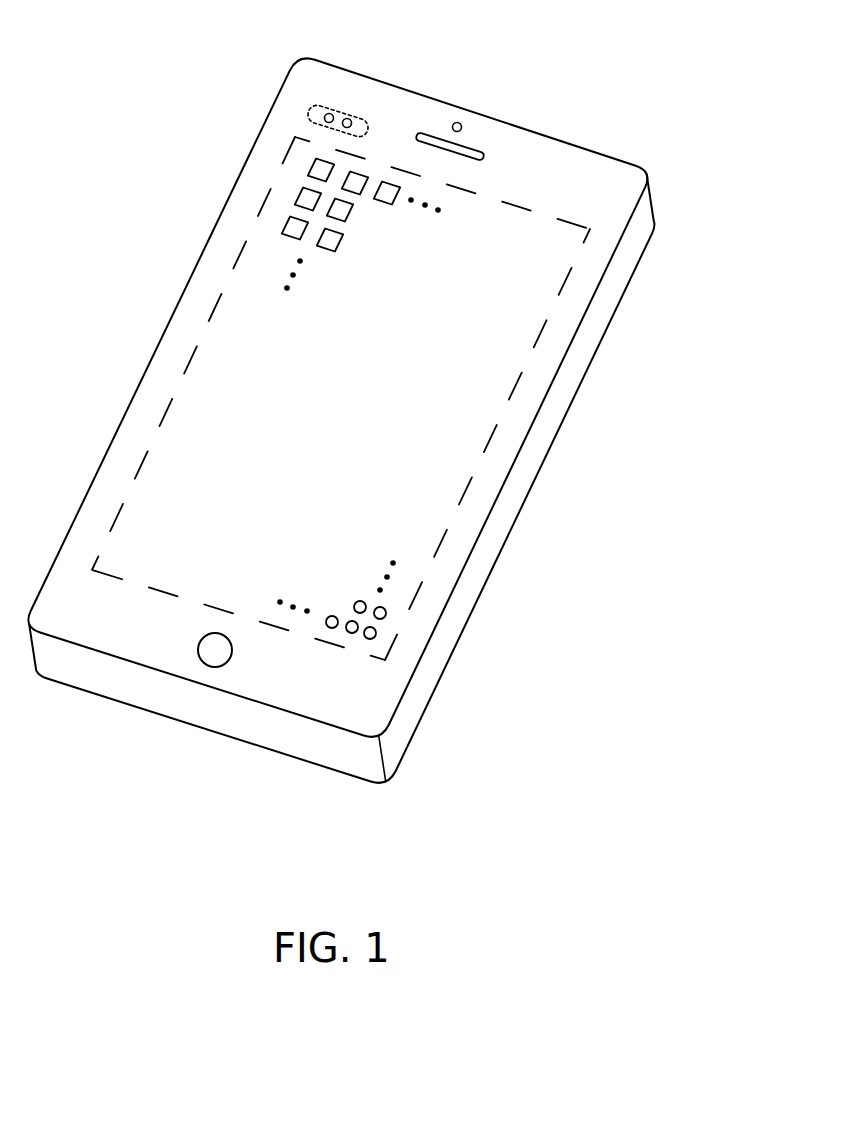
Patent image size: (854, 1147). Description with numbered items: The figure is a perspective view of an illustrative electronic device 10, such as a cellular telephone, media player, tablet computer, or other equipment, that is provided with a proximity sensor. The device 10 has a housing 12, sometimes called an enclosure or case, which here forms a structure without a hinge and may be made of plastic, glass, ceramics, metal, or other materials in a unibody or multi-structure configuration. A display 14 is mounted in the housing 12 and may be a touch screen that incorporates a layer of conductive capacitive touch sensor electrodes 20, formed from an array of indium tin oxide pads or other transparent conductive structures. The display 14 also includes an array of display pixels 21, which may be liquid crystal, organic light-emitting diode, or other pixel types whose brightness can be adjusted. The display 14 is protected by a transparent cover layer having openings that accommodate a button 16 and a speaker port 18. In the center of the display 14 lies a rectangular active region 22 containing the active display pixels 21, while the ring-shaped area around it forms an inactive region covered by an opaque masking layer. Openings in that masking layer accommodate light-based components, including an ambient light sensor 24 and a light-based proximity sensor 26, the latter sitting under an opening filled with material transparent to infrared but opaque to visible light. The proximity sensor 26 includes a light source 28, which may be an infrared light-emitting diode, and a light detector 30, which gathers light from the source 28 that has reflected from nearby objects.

The electronic device 10 is at (644, 56).
The housing 12 is at (625, 277).
The display 14 is at (462, 432).
The button 16 is at (213, 668).
The speaker port 18 is at (423, 132).
The capacitive touch screen electrodes 20 is at (311, 166).
The display pixels 21 is at (360, 600).
The active display region 22 is at (438, 553).
The ambient light sensor 24 is at (460, 122).
The light-based proximity sensor 26 is at (321, 111).
The light source 28 is at (330, 112).
The light detector 30 is at (348, 114).